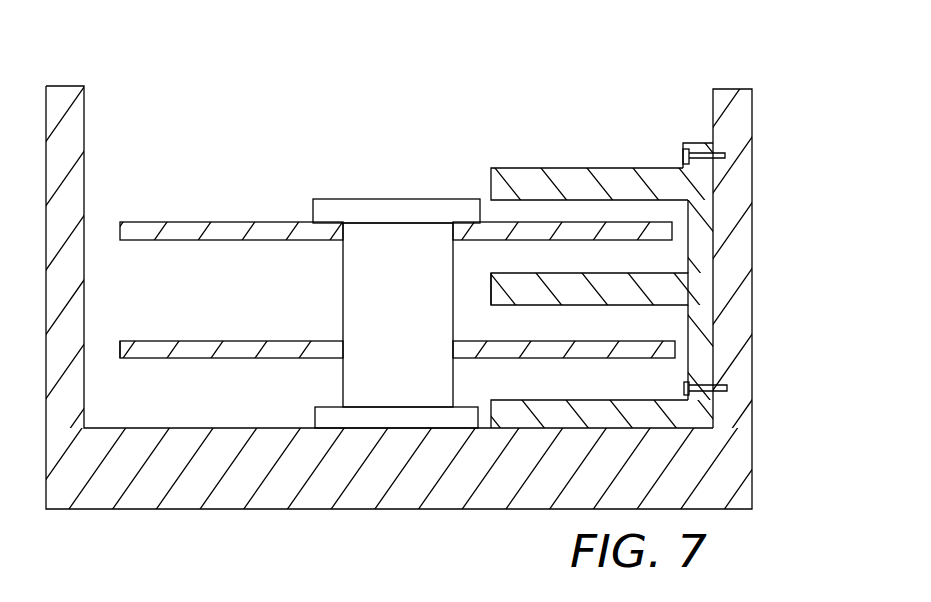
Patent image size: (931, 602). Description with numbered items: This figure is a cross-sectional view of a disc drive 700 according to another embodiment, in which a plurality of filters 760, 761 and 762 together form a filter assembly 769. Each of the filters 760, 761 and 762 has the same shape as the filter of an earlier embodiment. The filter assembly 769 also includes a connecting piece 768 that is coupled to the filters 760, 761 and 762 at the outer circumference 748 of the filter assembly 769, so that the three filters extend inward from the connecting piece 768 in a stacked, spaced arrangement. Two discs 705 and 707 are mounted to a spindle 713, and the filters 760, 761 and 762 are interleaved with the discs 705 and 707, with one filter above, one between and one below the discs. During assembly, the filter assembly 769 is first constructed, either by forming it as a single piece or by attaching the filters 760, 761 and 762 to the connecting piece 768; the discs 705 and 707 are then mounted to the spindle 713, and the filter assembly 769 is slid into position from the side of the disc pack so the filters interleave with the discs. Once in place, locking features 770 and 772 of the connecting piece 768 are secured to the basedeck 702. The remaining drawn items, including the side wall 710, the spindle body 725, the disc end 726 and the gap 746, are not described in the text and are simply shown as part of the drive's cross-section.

The disc drive 700 is at (683, 60).
The basedeck 702 is at (362, 482).
The disc 705 is at (235, 350).
The disc 707 is at (222, 227).
The side wall 710 is at (713, 116).
The spindle 713 is at (383, 235).
The piston body 725 is at (344, 350).
The plate end 726 is at (120, 348).
The gap 746 is at (490, 284).
The outer circumference 748 is at (712, 141).
The filter 760 is at (553, 286).
The filter 761 is at (530, 180).
The filter 762 is at (540, 405).
The connecting piece 768 is at (698, 270).
The filter assembly 769 is at (659, 266).
The locking feature 770 is at (725, 152).
The locking feature 772 is at (727, 388).